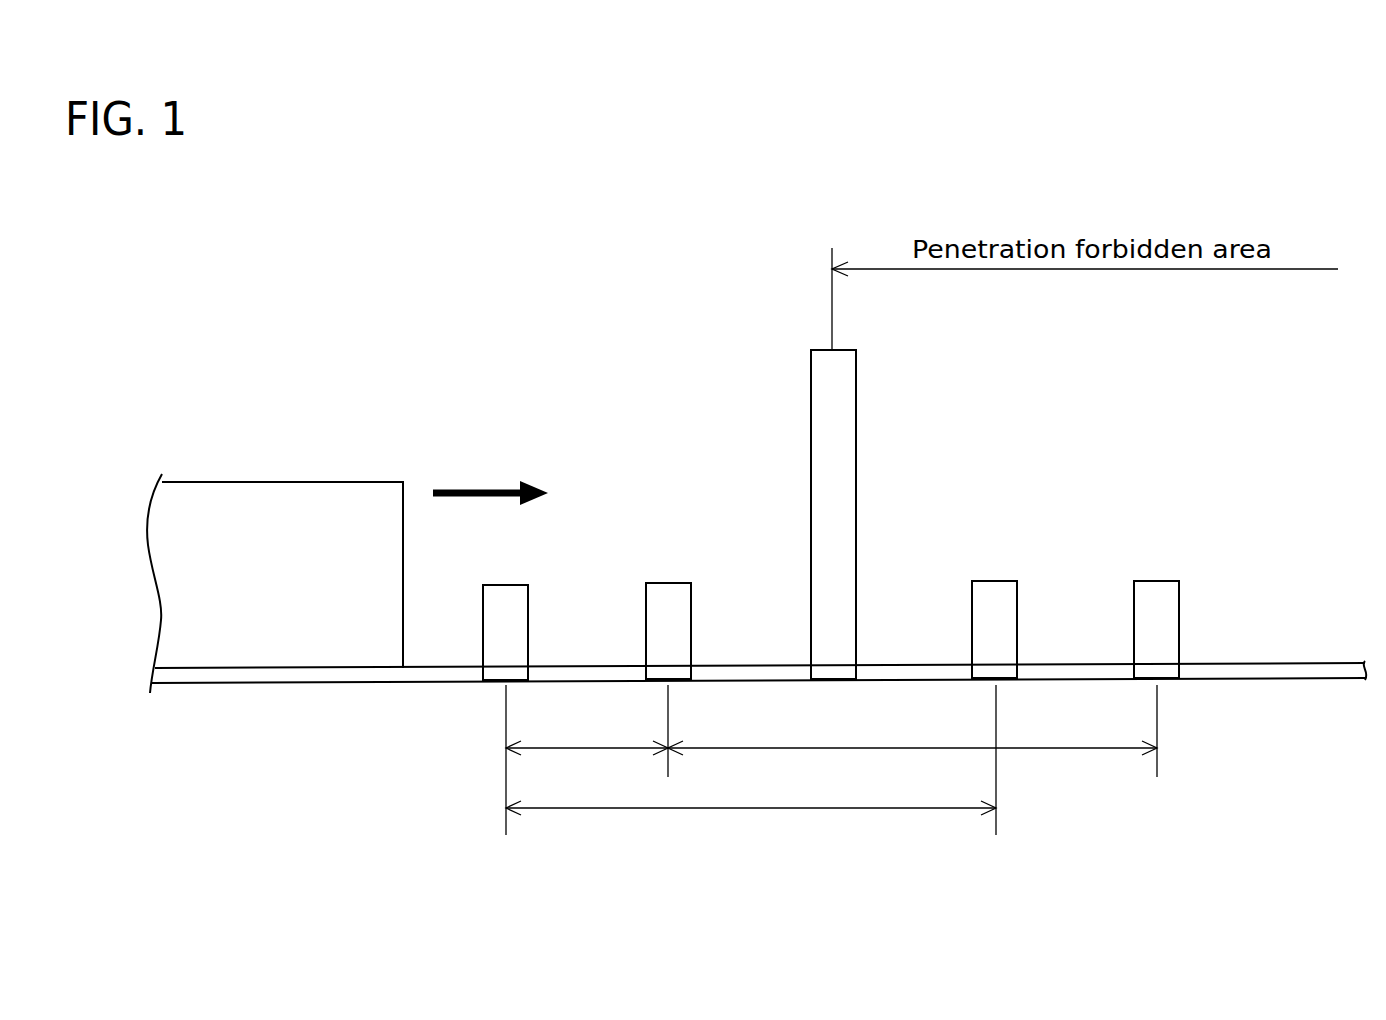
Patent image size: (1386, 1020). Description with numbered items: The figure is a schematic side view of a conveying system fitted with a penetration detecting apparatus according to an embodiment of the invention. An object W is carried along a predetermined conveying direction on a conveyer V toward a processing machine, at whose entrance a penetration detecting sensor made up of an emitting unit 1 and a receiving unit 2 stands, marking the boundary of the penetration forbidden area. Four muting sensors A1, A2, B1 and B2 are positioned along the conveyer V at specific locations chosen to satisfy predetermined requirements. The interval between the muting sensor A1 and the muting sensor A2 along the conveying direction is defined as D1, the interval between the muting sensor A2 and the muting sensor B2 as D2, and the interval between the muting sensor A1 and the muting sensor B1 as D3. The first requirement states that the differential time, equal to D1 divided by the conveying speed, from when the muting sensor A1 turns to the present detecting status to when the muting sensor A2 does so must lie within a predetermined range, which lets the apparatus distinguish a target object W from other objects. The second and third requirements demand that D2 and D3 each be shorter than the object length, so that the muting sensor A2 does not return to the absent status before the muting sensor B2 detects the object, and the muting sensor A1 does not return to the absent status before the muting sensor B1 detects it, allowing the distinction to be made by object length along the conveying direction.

The emitting unit 1 is at (868, 463).
The receiving unit 2 is at (856, 425).
The object W is at (268, 482).
The conveyer V is at (1290, 662).
The muting sensor A1 is at (490, 585).
The muting sensor A2 is at (665, 583).
The muting sensor B1 is at (1003, 581).
The muting sensor B2 is at (1165, 581).
The interval between muting sensors A1 and A2 D1 is at (587, 736).
The interval between muting sensors A2 and B2 D2 is at (912, 736).
The interval between muting sensors A1 and B1 D3 is at (751, 823).